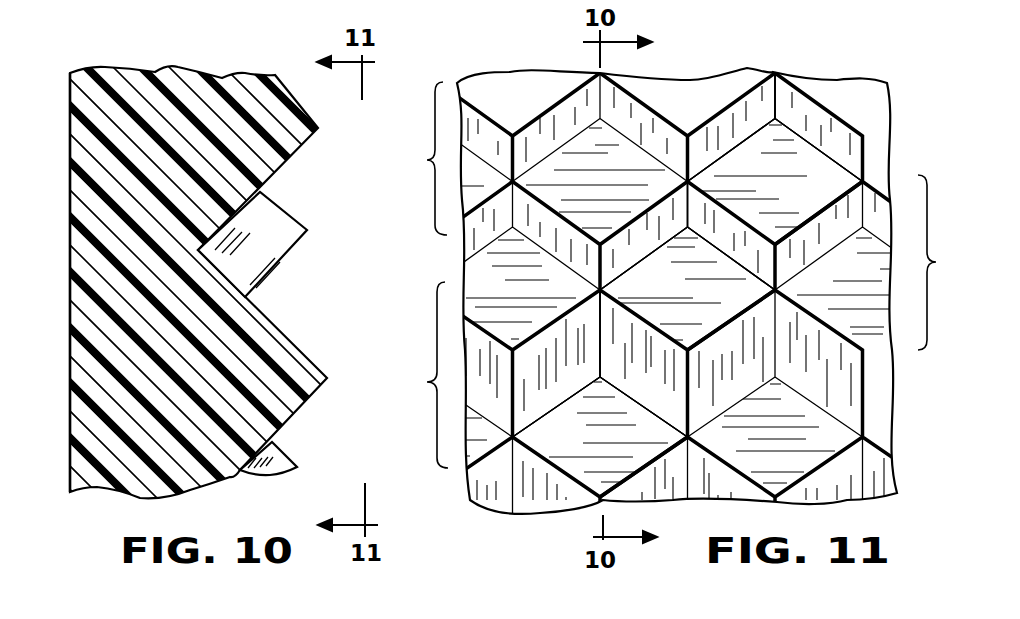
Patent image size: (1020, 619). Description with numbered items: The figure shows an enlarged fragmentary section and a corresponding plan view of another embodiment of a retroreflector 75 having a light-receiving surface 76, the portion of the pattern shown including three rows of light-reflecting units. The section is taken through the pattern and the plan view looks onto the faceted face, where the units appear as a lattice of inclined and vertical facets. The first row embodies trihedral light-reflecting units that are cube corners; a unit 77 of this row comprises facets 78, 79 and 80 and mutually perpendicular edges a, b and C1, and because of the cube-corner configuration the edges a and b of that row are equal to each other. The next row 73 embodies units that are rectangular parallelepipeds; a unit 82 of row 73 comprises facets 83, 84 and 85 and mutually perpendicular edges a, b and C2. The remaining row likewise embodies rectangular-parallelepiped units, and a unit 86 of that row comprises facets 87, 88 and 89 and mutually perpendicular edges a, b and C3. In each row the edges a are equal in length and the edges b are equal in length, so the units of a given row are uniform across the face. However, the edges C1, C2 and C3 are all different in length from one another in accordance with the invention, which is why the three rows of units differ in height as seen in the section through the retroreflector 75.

In FIG. 11, the row 73 is at (939, 262).
In FIG. 10, the retroreflector 75 is at (164, 75).
In FIG. 10, the light-receiving surface 76 is at (71, 88).
In FIG. 11, the unit 77 is at (637, 478).
In FIG. 11, the facet 78 is at (587, 468).
In FIG. 11, the facet 79 is at (548, 379).
In FIG. 11, the facet 80 is at (636, 379).
In FIG. 11, the unit 82 is at (713, 332).
In FIG. 11, the facet 83 is at (675, 319).
In FIG. 11, the facet 84 is at (629, 251).
In FIG. 11, the facet 85 is at (725, 251).
In FIG. 11, the unit 86 is at (801, 218).
In FIG. 11, the facet 87 is at (760, 208).
In FIG. 11, the facet 88 is at (718, 140).
In FIG. 11, the facet 89 is at (806, 140).
In FIG. 11, the edge C1 is at (607, 319).
In FIG. 11, the edge C2 is at (681, 185).
In FIG. 11, the edge C3 is at (783, 80).
In FIG. 11, the edge a is at (712, 168).
In FIG. 11, the edge b is at (837, 165).